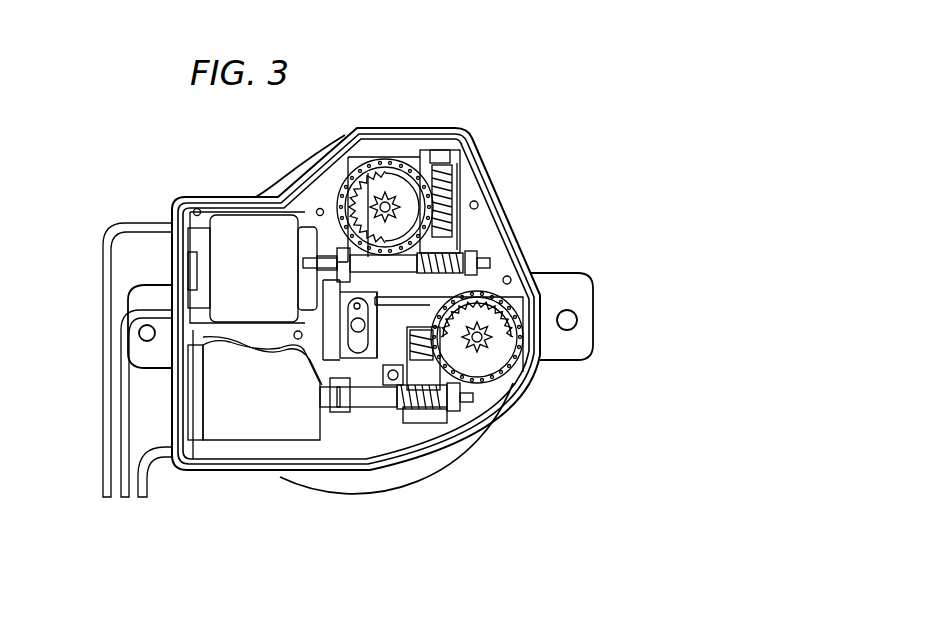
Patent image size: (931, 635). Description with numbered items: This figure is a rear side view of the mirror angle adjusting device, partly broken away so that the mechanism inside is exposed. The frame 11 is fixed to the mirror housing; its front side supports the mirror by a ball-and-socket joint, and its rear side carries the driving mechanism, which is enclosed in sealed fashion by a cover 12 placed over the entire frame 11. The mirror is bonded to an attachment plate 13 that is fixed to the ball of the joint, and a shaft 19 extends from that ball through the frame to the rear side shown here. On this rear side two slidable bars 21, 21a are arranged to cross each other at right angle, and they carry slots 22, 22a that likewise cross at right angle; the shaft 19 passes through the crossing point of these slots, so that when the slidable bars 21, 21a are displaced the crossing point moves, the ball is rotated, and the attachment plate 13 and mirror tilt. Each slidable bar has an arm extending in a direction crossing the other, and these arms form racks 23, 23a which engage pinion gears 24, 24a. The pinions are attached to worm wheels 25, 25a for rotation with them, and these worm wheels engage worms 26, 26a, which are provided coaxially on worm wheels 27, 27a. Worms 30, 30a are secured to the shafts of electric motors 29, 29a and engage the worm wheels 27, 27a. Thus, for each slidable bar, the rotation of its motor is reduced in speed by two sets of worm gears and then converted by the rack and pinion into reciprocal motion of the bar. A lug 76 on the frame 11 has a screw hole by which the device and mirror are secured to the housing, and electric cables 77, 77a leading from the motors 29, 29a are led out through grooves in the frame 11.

The frame 11 is at (453, 130).
The cover 12 is at (238, 453).
The attachment plate 13 is at (287, 180).
The shaft 19 is at (357, 392).
The slidable bar 21 is at (357, 197).
The slidable bar 21a is at (497, 307).
The slot 22 is at (333, 330).
The slot 22a is at (347, 297).
The rack 23 is at (380, 183).
The rack 23a is at (505, 365).
The pinion gear 24 is at (397, 193).
The pinion gear 24a is at (490, 350).
The worm wheel 25 is at (392, 158).
The worm wheel 25a is at (495, 400).
The worm 26 is at (447, 187).
The worm 26a is at (382, 425).
The worm wheel 27 is at (443, 247).
The worm wheel 27a is at (427, 410).
The electric motor 29 is at (233, 218).
The electric motor 29a is at (275, 352).
The worm 30 is at (493, 262).
The worm 30a is at (455, 405).
The lug 76 is at (583, 305).
The electric cable 77 is at (123, 343).
The electric cable 77a is at (140, 480).